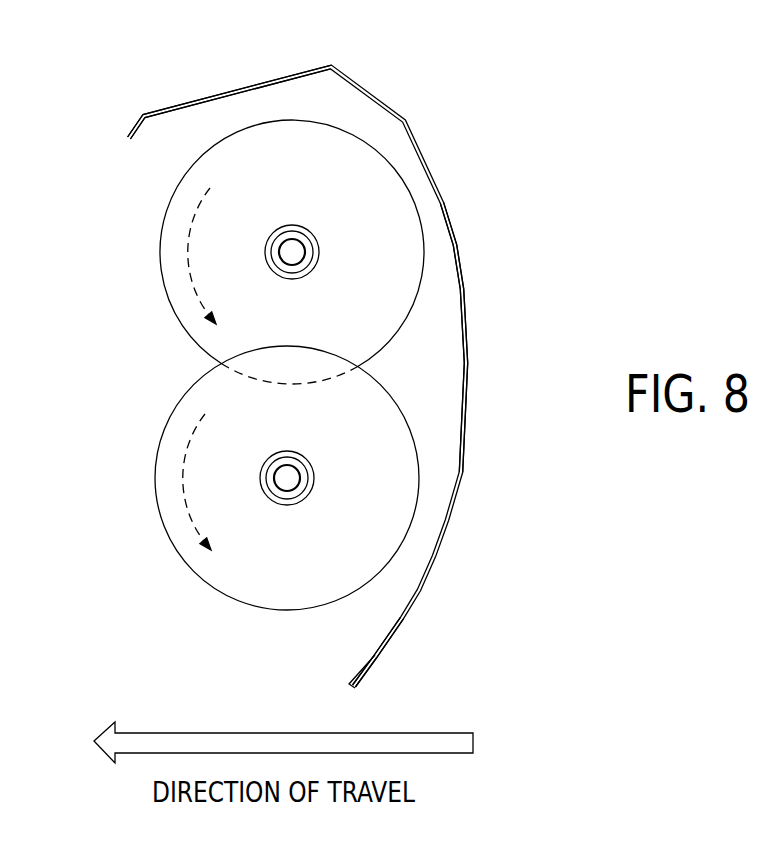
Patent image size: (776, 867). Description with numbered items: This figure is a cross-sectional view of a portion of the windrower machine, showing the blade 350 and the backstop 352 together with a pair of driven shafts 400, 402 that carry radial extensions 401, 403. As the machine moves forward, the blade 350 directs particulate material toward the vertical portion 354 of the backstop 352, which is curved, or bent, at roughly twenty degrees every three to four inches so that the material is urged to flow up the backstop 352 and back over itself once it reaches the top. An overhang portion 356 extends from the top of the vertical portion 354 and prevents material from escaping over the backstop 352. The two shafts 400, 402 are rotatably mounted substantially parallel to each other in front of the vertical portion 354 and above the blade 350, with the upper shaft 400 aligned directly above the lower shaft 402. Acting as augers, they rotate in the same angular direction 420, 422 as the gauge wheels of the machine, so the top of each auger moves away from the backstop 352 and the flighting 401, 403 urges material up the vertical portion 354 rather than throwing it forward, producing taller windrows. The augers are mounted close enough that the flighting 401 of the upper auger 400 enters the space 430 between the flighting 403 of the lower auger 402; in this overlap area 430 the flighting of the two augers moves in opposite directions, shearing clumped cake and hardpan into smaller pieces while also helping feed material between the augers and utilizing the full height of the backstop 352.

The blade 350 is at (348, 684).
The backstop 352 is at (433, 590).
The vertical portion 354 is at (464, 278).
The overhang portion 356 is at (260, 83).
The driven shaft 400 is at (290, 251).
The radial extension 401 is at (303, 140).
The driven shaft 402 is at (285, 477).
The radial extension 403 is at (395, 487).
The angular direction 420 is at (187, 248).
The angular direction 422 is at (182, 480).
The space 430 is at (310, 367).